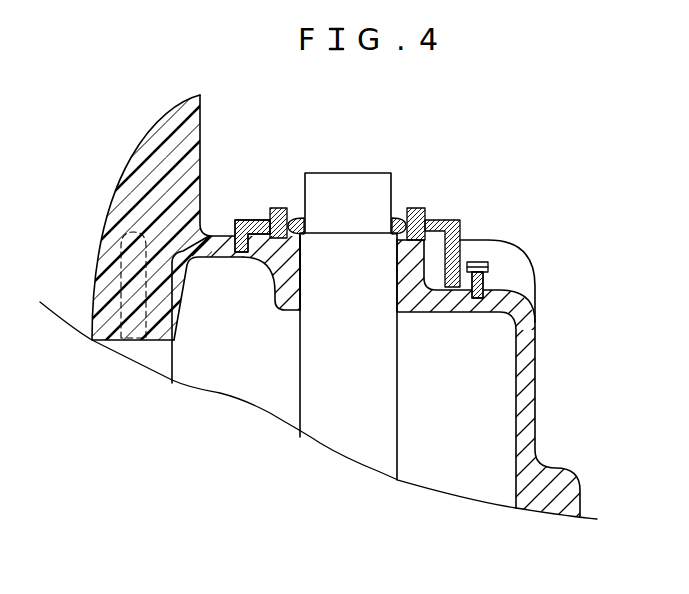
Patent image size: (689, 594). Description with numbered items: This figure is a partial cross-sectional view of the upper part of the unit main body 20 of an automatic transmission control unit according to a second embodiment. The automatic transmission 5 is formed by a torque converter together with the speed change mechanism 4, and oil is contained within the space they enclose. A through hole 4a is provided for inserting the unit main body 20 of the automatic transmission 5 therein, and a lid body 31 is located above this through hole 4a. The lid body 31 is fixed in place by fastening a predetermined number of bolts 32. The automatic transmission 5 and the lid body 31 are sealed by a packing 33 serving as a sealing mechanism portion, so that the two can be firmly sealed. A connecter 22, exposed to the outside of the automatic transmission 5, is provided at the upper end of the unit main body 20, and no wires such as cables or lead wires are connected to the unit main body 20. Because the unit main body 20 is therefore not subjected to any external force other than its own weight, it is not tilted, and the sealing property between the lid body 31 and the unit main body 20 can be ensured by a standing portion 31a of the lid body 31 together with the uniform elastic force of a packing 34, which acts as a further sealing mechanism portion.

The speed change mechanism 4 is at (539, 383).
The through hole 4a is at (300, 262).
The automatic transmission 5 is at (545, 281).
The unit main body 20 is at (398, 412).
The connecter 22 is at (358, 185).
The lid body 31 is at (460, 221).
The standing portion 31a is at (413, 208).
The bolt 32 is at (481, 258).
The packing 33 is at (256, 258).
The packing 34 is at (292, 211).